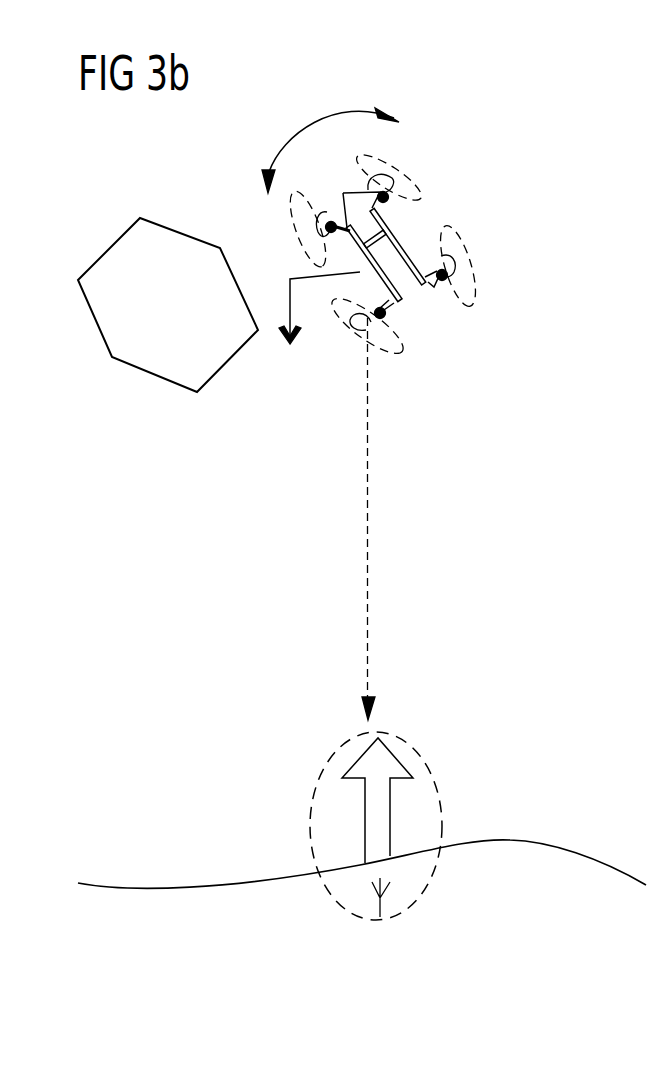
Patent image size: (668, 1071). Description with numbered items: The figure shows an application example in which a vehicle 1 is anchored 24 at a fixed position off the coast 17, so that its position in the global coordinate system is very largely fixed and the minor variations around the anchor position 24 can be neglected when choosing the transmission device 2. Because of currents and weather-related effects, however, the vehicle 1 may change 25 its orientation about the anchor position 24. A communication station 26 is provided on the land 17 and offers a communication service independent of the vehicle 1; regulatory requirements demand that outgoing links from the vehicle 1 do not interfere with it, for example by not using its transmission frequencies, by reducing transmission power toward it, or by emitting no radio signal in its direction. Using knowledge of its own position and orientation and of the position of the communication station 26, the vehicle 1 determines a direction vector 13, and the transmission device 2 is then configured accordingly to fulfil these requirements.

The vehicle 1 is at (477, 172).
The transmission device 2 is at (423, 147).
The direction vector 13 is at (369, 498).
The coast 17 is at (553, 842).
The anchor position 24 is at (293, 345).
The change of orientation 25 is at (310, 119).
The communication station 26 is at (431, 772).